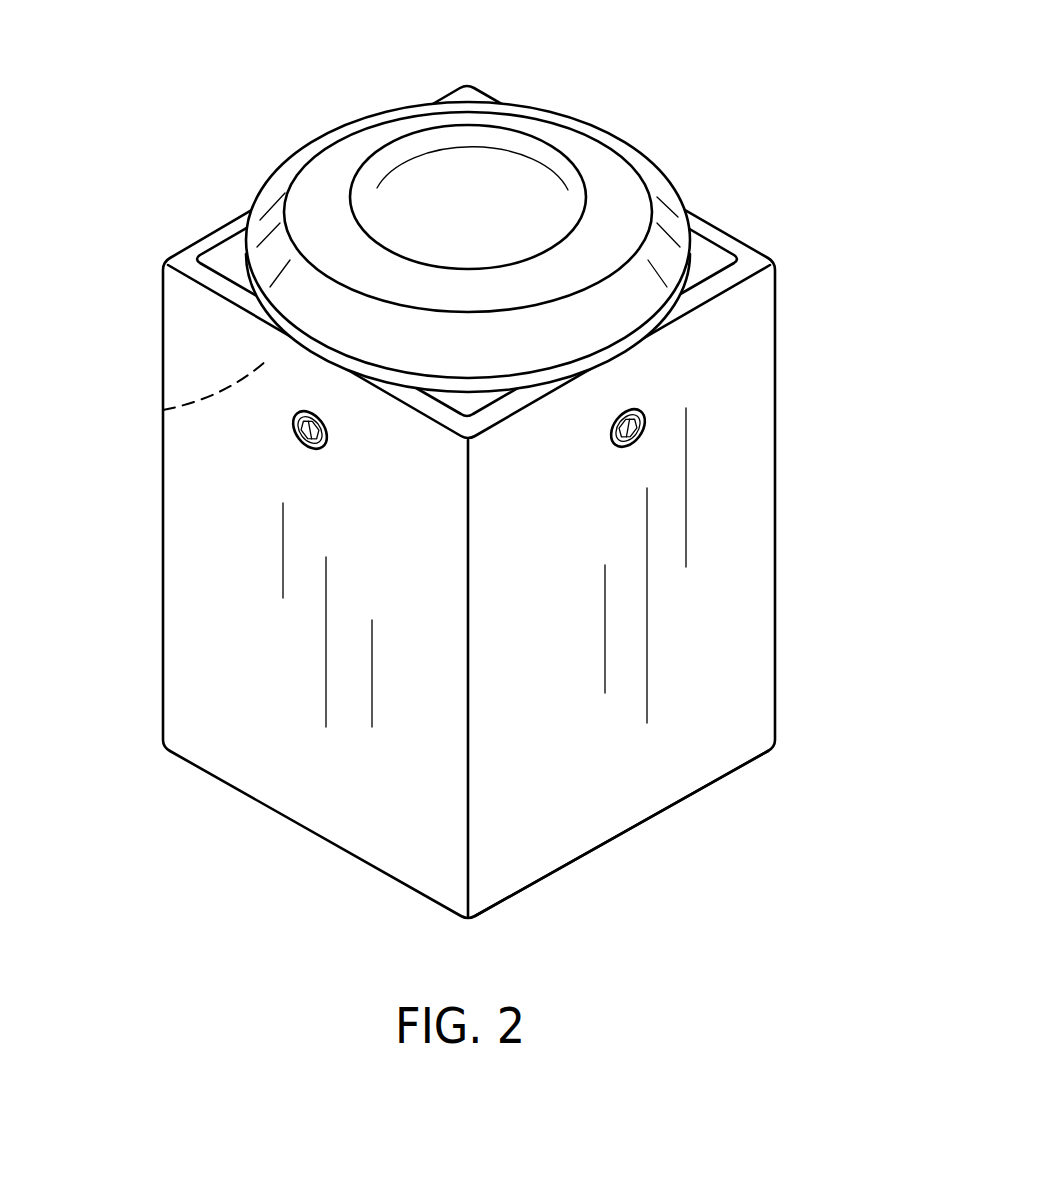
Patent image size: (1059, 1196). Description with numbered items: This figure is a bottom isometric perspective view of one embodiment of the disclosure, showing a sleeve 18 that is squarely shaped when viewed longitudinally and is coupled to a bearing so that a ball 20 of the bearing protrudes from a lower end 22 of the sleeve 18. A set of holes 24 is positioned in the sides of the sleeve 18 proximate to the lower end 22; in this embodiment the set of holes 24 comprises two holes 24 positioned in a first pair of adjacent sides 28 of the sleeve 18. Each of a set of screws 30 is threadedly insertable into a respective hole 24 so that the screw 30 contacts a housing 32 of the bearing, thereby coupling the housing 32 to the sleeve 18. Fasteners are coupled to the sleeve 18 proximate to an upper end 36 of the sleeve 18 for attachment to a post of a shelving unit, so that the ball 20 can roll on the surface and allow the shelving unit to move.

The sleeve 18 is at (205, 615).
The ball 20 is at (508, 142).
The lower end 22 is at (723, 240).
The holes 24 is at (627, 412).
The first pair of adjacent sides 28 is at (373, 705).
The screws 30 is at (313, 457).
The housing 32 is at (163, 410).
The upper end 36 is at (583, 860).